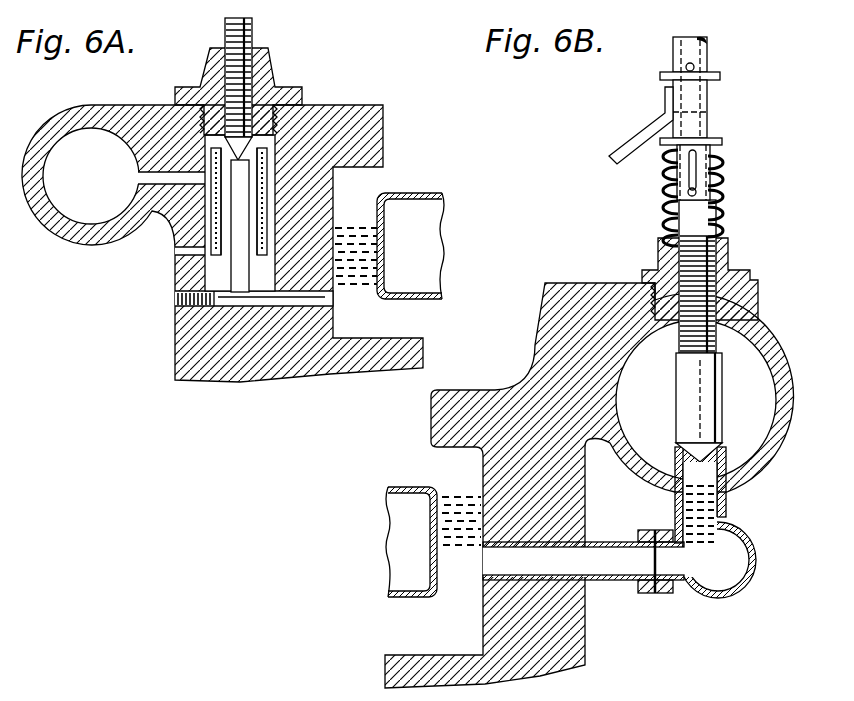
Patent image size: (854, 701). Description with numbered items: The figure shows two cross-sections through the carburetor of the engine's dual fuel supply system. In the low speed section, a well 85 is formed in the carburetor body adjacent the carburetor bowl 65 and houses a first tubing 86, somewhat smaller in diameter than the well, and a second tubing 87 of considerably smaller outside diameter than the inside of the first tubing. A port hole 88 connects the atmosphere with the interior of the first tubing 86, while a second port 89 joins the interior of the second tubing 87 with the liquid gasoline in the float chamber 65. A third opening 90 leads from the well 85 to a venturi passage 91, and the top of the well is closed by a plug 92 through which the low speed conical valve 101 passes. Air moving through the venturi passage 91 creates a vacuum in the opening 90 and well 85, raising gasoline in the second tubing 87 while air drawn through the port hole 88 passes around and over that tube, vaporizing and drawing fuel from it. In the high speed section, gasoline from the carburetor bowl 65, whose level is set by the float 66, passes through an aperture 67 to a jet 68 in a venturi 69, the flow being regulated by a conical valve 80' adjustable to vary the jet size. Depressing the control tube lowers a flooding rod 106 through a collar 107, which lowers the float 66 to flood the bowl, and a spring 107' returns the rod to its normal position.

In FIG. 6A, the carburetor bowl 65 is at (336, 208).
In FIG. 6B, the carburetor bowl 65 is at (483, 470).
In FIG. 6A, the float 66 is at (414, 194).
In FIG. 6B, the float 66 is at (391, 490).
In FIG. 6B, the aperture 67 is at (617, 567).
In FIG. 6B, the jet 68 is at (722, 448).
In FIG. 6B, the venturi 69 is at (778, 392).
In FIG. 6B, the conical valve 80' is at (679, 407).
In FIG. 6A, the well 85 is at (268, 185).
In FIG. 6A, the first tubing 86 is at (264, 166).
In FIG. 6A, the second tubing 87 is at (262, 160).
In FIG. 6A, the port hole 88 is at (197, 251).
In FIG. 6A, the second port 89 is at (330, 300).
In FIG. 6A, the third opening 90 is at (165, 177).
In FIG. 6A, the venturi passage 91 is at (97, 198).
In FIG. 6A, the plug 92 is at (262, 62).
In FIG. 6A, the conical valve 101 is at (203, 143).
In FIG. 6B, the flooding rod 106 is at (650, 130).
In FIG. 6B, the collar 107 is at (717, 91).
In FIG. 6B, the spring 107' is at (723, 249).